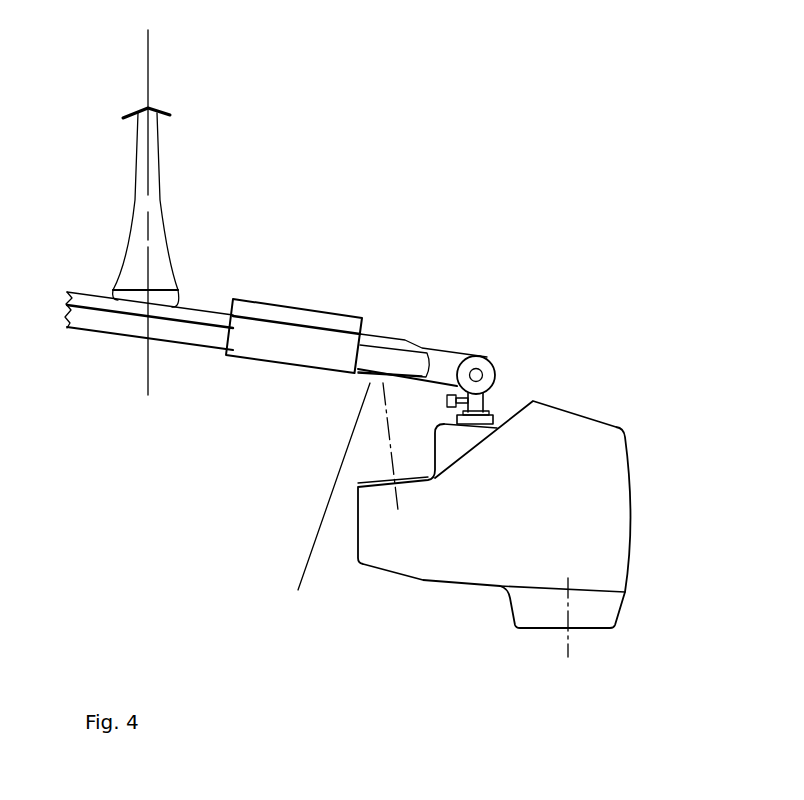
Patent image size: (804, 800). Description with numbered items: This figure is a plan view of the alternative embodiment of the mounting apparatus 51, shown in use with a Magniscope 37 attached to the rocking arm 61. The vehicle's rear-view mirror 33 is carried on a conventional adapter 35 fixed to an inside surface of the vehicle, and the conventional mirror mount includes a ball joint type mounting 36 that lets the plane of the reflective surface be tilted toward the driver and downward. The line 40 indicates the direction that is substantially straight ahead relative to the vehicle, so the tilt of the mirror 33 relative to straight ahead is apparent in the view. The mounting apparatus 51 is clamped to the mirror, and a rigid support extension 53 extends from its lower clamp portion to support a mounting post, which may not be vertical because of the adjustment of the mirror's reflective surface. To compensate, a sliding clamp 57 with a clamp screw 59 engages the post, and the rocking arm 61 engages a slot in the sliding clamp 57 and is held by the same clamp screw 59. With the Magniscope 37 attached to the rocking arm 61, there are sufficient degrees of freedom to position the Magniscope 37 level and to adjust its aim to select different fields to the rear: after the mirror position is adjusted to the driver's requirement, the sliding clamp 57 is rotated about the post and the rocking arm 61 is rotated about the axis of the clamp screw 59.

The rear-view mirror 33 is at (107, 342).
The conventional adapter 35 is at (166, 234).
The ball joint type mounting 36 is at (182, 300).
The Magniscope 37 is at (572, 410).
The line 40 is at (146, 85).
The mounting apparatus 51 is at (306, 290).
The rigid support extension 53 is at (435, 350).
The sliding clamp 57 is at (487, 356).
The clamp screw 59 is at (445, 402).
The rocking arm 61 is at (465, 424).